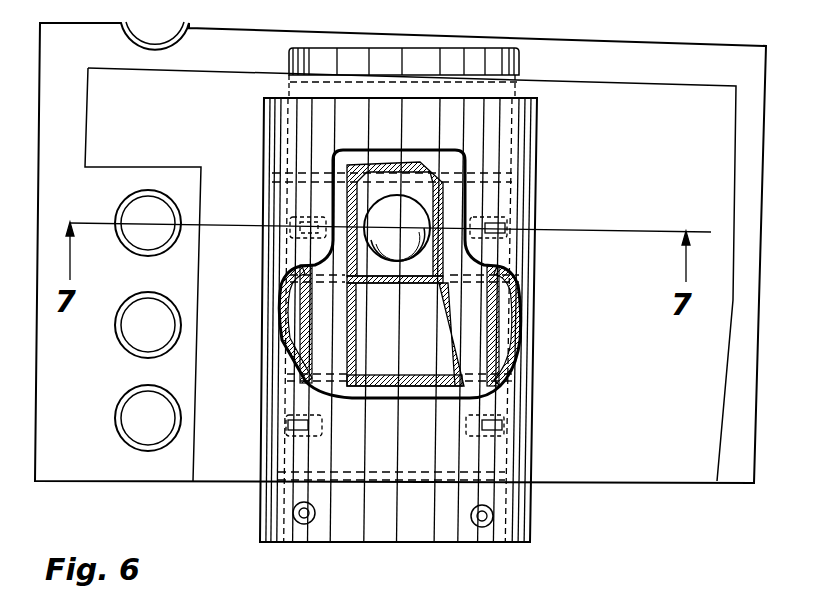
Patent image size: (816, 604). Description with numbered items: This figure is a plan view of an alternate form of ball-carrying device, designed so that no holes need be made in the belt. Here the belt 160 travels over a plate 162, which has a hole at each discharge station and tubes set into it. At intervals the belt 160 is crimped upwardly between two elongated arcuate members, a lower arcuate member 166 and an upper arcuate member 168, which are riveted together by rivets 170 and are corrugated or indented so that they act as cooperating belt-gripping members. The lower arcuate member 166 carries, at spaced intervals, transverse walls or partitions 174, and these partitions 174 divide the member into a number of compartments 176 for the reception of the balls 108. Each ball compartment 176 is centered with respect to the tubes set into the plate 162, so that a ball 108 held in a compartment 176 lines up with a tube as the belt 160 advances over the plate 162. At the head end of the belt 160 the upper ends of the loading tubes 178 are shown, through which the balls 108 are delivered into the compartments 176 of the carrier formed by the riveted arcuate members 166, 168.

The ball 108 is at (400, 207).
The belt 160 is at (502, 92).
The plate 162 is at (713, 50).
The lower arcuate member 166 is at (289, 52).
The upper arcuate member 168 is at (418, 533).
The rivets 170 is at (312, 521).
The transverse walls or partitions 174 is at (430, 288).
The compartments 176 is at (405, 274).
The upper ends of loading tubes 178 is at (152, 256).